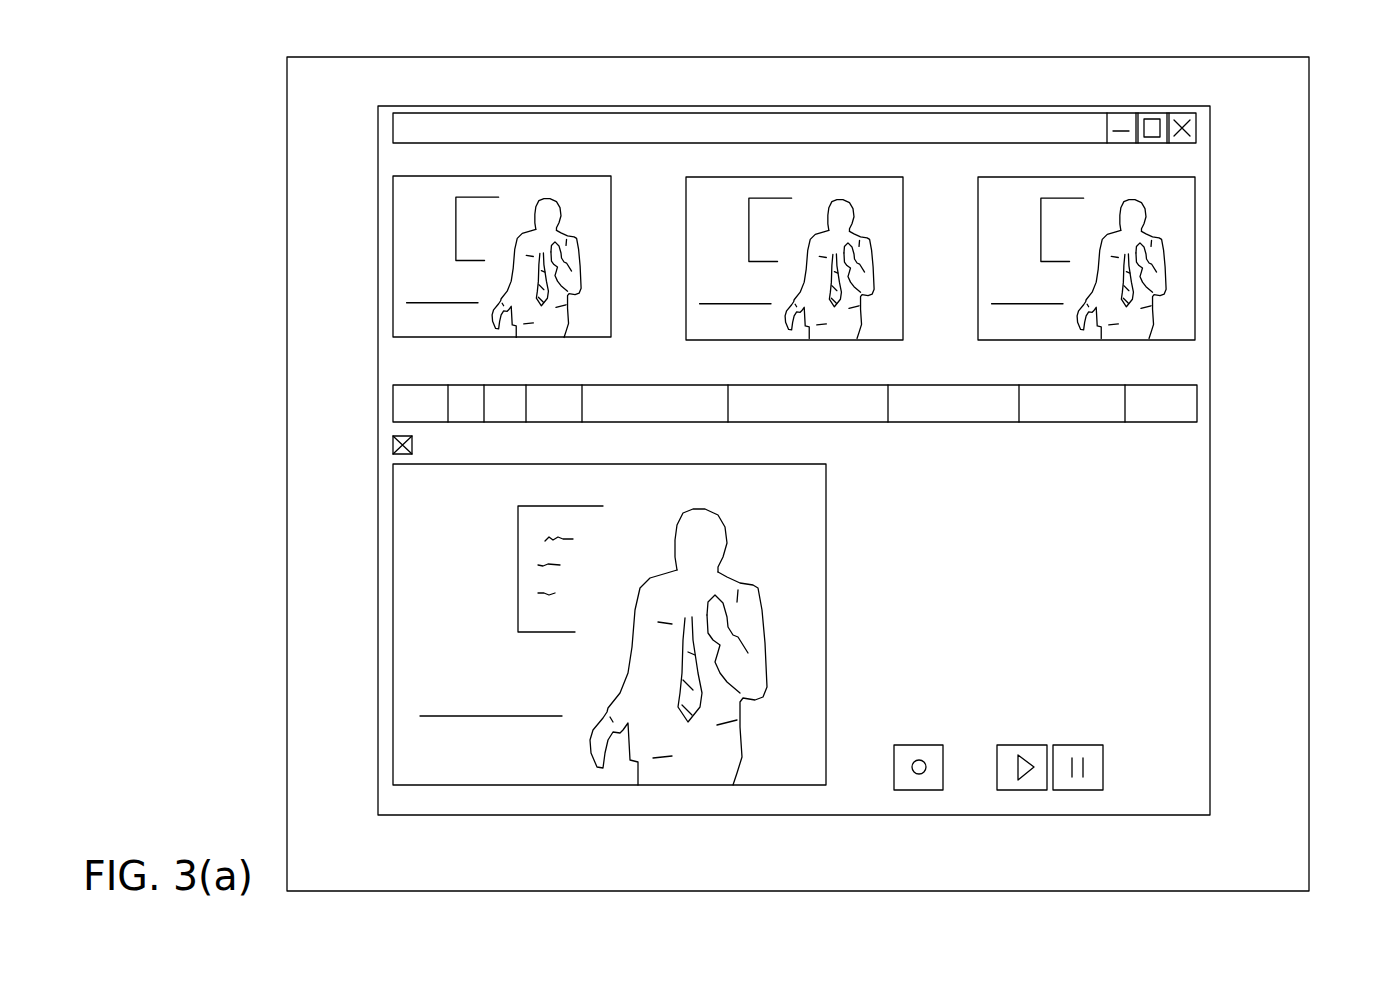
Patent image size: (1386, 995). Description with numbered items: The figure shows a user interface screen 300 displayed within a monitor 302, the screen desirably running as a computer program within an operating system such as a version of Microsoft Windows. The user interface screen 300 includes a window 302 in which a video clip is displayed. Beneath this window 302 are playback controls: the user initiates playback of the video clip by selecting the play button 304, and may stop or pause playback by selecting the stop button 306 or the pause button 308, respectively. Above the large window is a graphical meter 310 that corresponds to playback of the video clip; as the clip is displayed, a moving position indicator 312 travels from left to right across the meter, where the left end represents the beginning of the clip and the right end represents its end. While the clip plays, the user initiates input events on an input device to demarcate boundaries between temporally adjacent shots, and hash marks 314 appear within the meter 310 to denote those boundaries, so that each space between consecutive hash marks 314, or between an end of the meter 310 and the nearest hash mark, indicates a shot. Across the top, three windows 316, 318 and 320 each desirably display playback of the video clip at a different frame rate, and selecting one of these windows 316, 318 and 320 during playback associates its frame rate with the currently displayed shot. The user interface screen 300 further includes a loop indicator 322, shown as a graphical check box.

The user interface screen 300 is at (1210, 585).
The window 302 is at (1310, 509).
The play button 304 is at (1022, 790).
The stop button 306 is at (919, 790).
The pause button 308 is at (1083, 790).
The graphical meter 310 is at (1197, 403).
The moving position indicator 312 is at (448, 400).
The hash marks 314 is at (582, 400).
The window 316 is at (436, 176).
The window 318 is at (737, 177).
The window 320 is at (1029, 177).
The loop indicator 322 is at (393, 446).